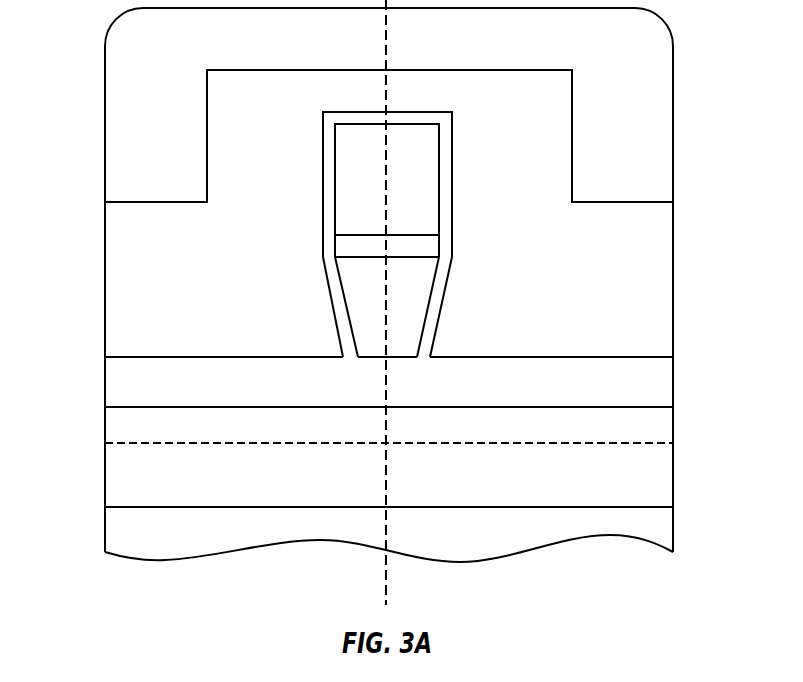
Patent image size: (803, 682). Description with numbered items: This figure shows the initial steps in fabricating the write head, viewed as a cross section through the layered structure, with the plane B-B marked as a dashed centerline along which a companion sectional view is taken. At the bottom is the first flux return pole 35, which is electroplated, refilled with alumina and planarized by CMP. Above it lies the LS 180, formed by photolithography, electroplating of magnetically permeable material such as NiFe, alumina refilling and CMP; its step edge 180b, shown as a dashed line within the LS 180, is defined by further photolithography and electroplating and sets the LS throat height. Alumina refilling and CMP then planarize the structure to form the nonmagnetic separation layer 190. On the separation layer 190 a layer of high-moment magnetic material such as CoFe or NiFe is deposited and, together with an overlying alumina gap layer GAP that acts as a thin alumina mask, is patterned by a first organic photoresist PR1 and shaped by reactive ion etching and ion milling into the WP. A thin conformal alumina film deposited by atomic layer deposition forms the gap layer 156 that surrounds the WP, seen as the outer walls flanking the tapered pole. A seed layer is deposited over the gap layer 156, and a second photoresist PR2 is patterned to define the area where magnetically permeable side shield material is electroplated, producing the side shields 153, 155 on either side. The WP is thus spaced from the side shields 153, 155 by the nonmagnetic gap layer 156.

The side shield 155 is at (118, 282).
The side shield 153 is at (660, 285).
The gap layer 156 is at (338, 303).
The nonmagnetic separation layer 190 is at (660, 380).
The LS 180 is at (118, 483).
The step edge 180b is at (280, 443).
The first flux return pole 35 is at (133, 537).
The first layer of organic photoresist PR1 is at (428, 198).
The second photoresist layer PR2 is at (660, 101).
The gap layer GAP is at (428, 247).
The write pole WP is at (417, 320).
The plane B-B is at (388, 43).